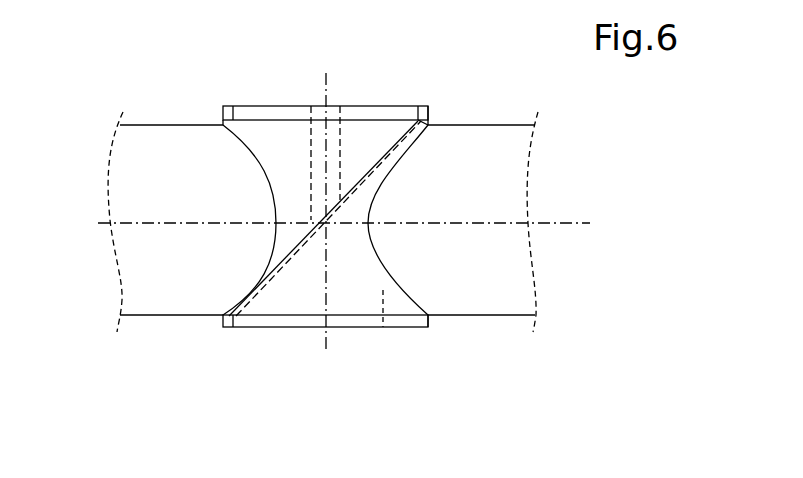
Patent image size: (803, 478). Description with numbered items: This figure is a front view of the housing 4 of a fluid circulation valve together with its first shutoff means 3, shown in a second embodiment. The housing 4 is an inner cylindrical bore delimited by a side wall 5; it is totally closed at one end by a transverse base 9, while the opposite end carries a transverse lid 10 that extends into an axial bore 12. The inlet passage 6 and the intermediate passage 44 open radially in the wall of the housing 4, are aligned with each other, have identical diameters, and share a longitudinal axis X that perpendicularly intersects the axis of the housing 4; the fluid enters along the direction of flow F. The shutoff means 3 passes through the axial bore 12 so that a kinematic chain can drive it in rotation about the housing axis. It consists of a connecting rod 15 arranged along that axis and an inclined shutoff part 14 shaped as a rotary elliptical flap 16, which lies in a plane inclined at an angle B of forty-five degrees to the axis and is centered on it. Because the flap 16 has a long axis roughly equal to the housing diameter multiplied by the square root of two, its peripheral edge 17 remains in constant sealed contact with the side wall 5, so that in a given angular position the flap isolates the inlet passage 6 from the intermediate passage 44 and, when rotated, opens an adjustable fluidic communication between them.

The first shutoff means 3 is at (291, 157).
The housing 4 is at (385, 327).
The side wall 5 is at (406, 112).
The inlet passage 6 is at (177, 140).
The transverse base 9 is at (428, 318).
The transverse lid 10 is at (422, 105).
The axial bore 12 is at (345, 97).
The inclined shutoff part 14 is at (325, 248).
The connecting rod 15 is at (310, 137).
The elliptical flap 16 is at (271, 281).
The peripheral edge 17 is at (229, 313).
The intermediate passage 44 is at (522, 273).
The angle B is at (336, 146).
The longitudinal axis X is at (576, 223).
The direction of flow of the fluid F is at (74, 223).